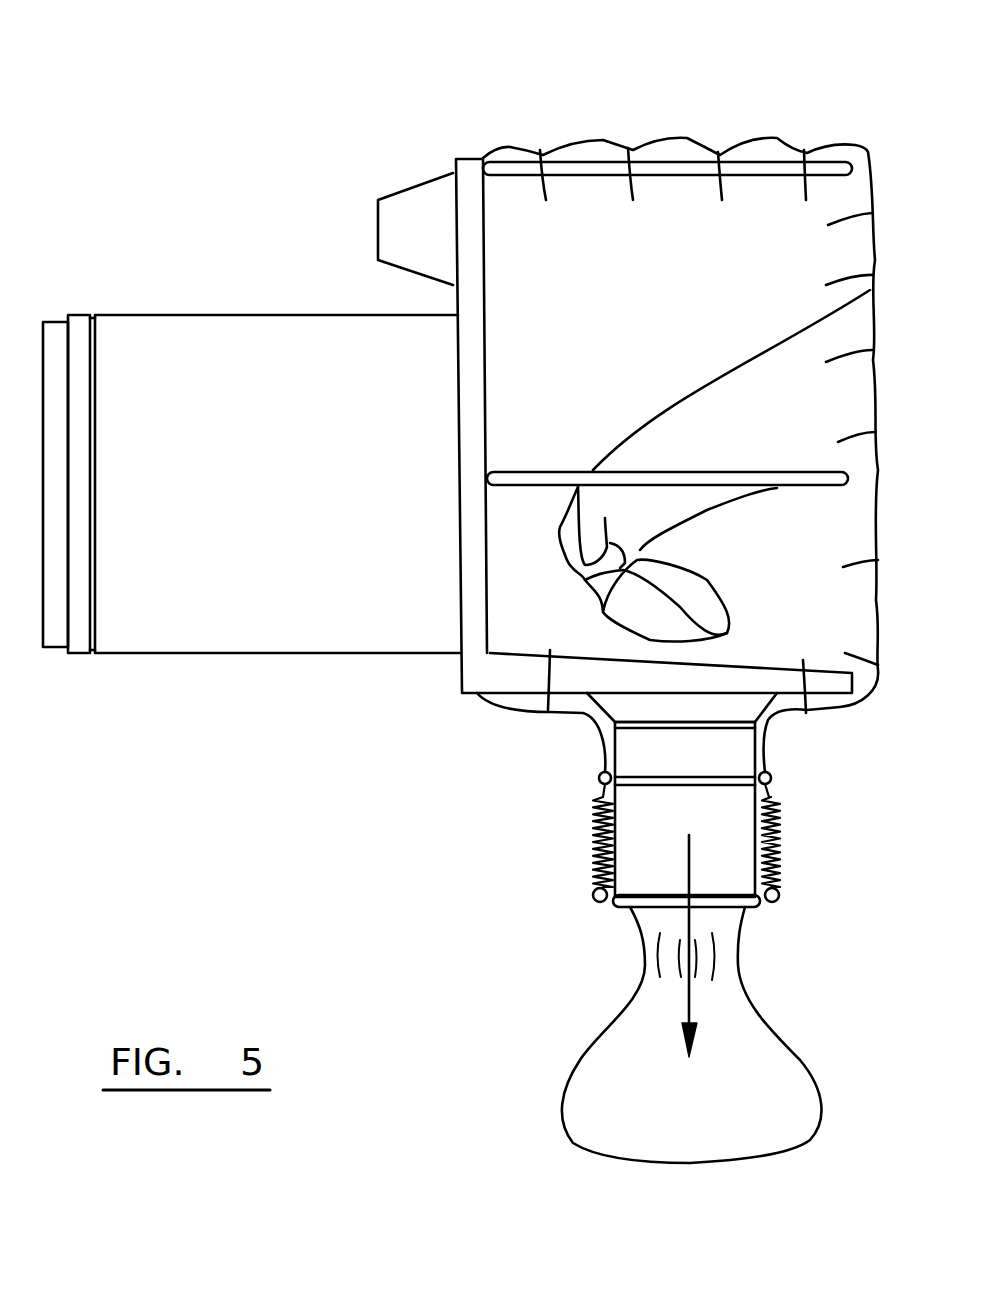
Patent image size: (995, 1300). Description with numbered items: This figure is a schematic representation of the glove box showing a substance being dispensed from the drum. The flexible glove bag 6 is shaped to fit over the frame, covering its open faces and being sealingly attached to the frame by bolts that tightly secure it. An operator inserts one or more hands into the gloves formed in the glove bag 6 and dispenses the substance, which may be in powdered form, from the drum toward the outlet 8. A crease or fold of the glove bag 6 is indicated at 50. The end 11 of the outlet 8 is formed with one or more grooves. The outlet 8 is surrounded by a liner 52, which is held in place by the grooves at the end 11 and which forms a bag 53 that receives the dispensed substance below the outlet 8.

The glove bag 6 is at (676, 140).
The fold line of bag 50 is at (712, 400).
The liner 52 is at (597, 735).
The outlet 8 is at (712, 826).
The end of the outlet 11 is at (595, 905).
The bag 53 is at (555, 1108).